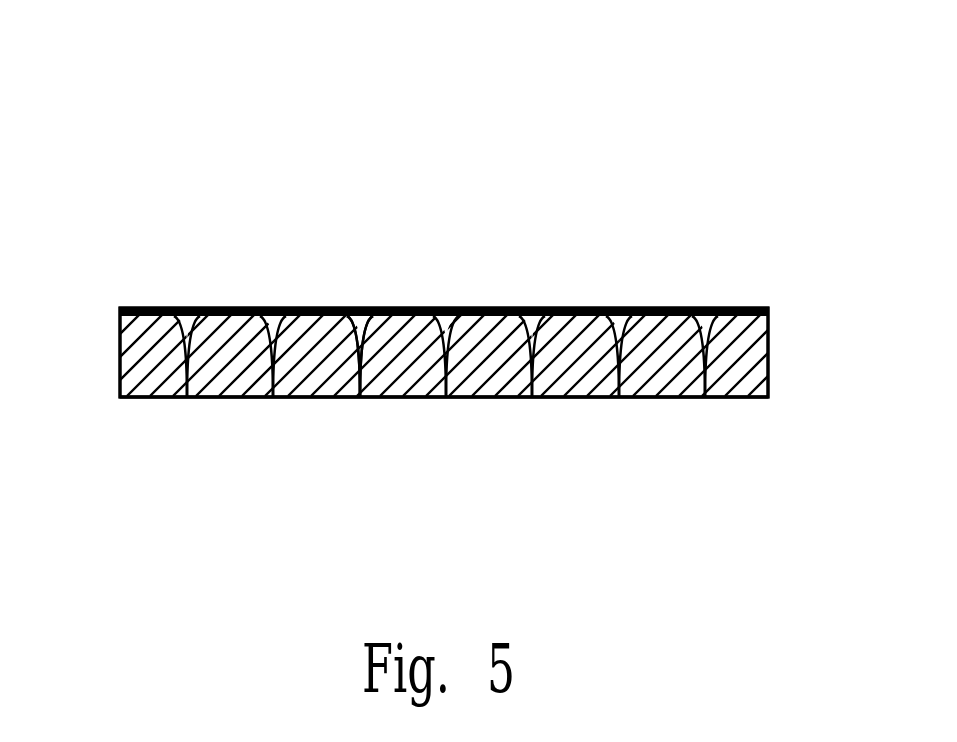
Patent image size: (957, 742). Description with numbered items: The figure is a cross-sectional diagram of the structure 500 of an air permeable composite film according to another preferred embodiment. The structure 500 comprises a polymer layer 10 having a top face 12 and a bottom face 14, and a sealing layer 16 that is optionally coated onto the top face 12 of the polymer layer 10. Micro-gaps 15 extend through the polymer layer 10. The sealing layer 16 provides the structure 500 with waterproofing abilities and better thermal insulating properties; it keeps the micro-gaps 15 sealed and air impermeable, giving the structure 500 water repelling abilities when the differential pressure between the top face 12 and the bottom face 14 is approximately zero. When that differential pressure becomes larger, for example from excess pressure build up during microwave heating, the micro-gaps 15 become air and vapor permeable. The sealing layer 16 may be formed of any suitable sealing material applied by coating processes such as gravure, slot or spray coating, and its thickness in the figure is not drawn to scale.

The structure 500 is at (185, 148).
The polymer layer 10 is at (733, 367).
The top face 12 is at (591, 307).
The bottom face 14 is at (480, 430).
The micro-gaps 15 is at (359, 323).
The sealing layer 16 is at (735, 308).